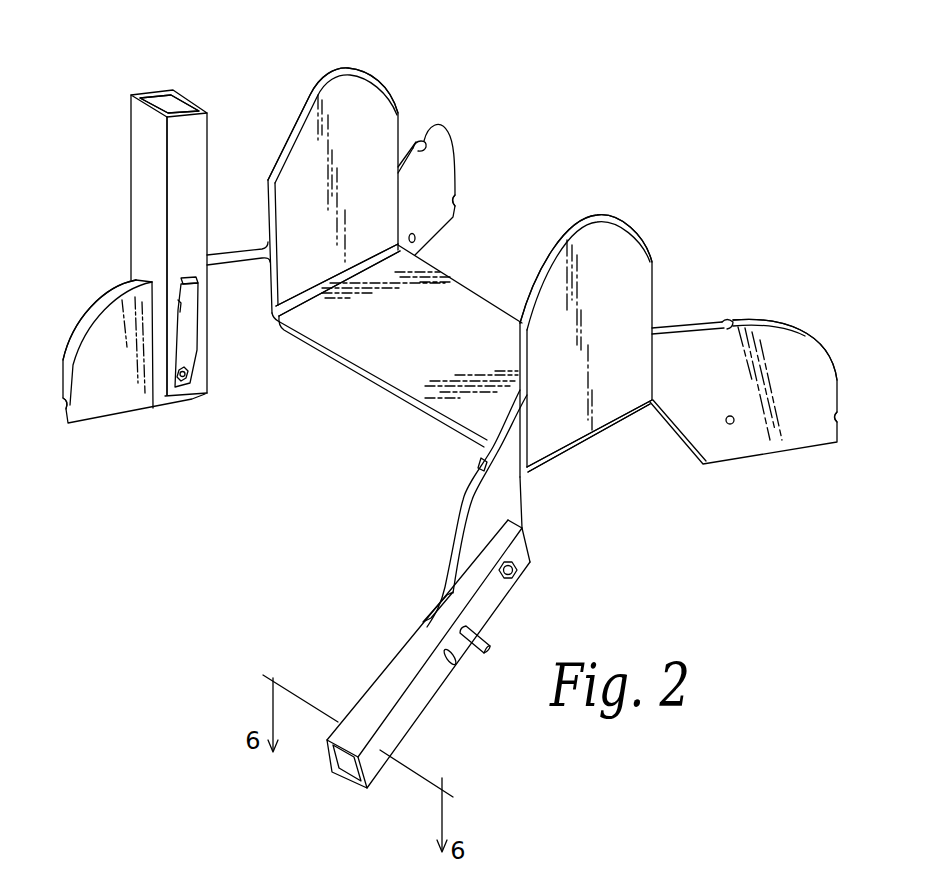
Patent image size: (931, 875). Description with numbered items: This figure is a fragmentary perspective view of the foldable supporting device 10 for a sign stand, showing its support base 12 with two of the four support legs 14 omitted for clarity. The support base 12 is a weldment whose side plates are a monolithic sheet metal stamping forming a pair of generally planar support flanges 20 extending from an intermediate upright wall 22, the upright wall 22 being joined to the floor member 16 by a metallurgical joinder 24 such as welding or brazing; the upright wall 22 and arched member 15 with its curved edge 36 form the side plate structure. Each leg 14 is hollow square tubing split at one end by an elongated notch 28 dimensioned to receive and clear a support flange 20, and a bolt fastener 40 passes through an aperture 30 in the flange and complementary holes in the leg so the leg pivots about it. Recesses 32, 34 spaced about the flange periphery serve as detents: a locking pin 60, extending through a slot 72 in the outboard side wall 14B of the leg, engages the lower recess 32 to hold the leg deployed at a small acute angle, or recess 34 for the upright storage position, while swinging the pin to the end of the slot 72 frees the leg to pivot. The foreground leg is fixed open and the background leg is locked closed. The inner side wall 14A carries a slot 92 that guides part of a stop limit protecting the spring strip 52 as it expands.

The foldable supporting device 10 is at (597, 113).
The support base 12 is at (627, 223).
The support leg 14 is at (128, 144).
The inner side wall 14A is at (203, 170).
The outboard side wall 14B is at (155, 93).
The upright panel member 15 is at (383, 86).
The floor member 16 is at (365, 357).
The support flange 20 is at (113, 395).
The upright wall 22 is at (460, 272).
The metallurgical joinder 24 is at (365, 262).
The elongated notch 28 is at (425, 620).
The aperture 30 is at (733, 425).
The recess 32 is at (64, 408).
The recess 34 is at (422, 142).
The curved edge 36 is at (100, 310).
The bolt fastener 40 is at (520, 570).
The spring strip 52 is at (190, 300).
The locking pin 60 is at (495, 645).
The slot 72 is at (455, 660).
The slot 92 is at (190, 278).